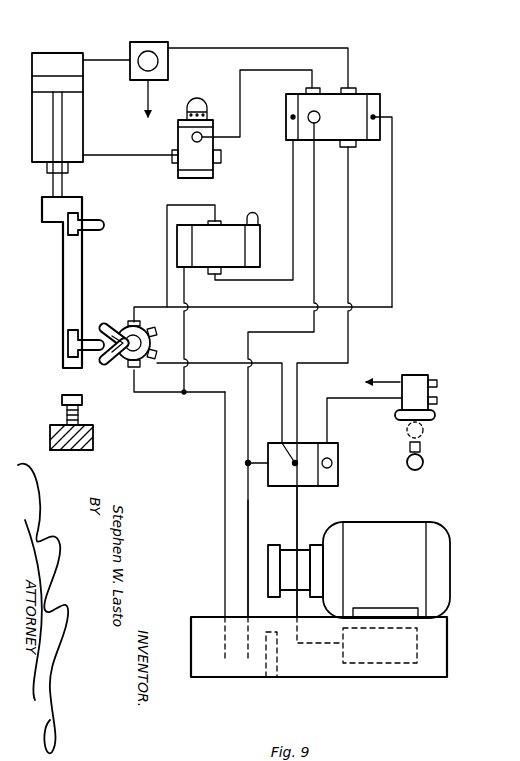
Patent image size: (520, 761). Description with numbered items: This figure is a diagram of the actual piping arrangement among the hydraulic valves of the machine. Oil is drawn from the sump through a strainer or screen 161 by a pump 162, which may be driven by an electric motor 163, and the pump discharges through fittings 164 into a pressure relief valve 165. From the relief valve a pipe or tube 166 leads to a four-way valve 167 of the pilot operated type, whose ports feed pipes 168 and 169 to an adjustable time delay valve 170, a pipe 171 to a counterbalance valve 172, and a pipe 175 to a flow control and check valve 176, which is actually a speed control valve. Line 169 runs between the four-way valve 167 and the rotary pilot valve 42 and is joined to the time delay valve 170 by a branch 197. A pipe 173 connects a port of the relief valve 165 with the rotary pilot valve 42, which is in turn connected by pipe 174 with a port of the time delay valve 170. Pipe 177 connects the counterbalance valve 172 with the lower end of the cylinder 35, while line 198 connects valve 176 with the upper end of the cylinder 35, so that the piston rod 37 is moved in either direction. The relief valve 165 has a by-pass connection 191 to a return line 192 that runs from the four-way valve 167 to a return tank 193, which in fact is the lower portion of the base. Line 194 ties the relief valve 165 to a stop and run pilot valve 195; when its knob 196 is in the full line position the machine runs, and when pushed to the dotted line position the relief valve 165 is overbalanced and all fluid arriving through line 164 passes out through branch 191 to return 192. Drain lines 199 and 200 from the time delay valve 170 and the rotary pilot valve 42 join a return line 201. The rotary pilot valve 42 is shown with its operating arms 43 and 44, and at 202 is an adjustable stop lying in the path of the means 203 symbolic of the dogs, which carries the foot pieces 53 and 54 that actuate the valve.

The cylinder 35 is at (87, 128).
The piston rod 37 is at (62, 190).
The rotary pilot valve 42 is at (123, 374).
The valve arm 43 is at (112, 323).
The valve arm 44 is at (106, 366).
The foot piece 53 is at (100, 229).
The foot piece 54 is at (88, 340).
The strainer or screen 161 is at (387, 661).
The pump 162 is at (300, 572).
The electric motor 163 is at (440, 542).
The fittings 164 is at (298, 512).
The pressure relief valve 165 is at (341, 467).
The pipe or tube 166 is at (348, 340).
The four-way valve 167 is at (375, 90).
The pipe 168 is at (292, 164).
The pipe 169 is at (392, 181).
The adjustable time delay valve 170 is at (232, 220).
The pipe 171 is at (271, 74).
The counterbalance valve 172 is at (203, 96).
The pipe 173 is at (275, 363).
The pipe 174 is at (166, 240).
The pipe 175 is at (320, 46).
The flow control and check valve 176 is at (146, 42).
The pipe 177 is at (134, 154).
The by-pass connection 191 is at (262, 465).
The return line 192 is at (250, 538).
The return tank 193 is at (211, 665).
The line 194 is at (375, 400).
The pilot valve 195 is at (446, 377).
The knob 196 is at (424, 430).
The branch 197 is at (255, 299).
The line 198 is at (103, 50).
The drain line 199 is at (187, 338).
The drain line 200 is at (160, 394).
The return line 201 is at (224, 460).
The adjustable stop 202 is at (48, 437).
The means symbolic of the dogs 203 is at (65, 266).